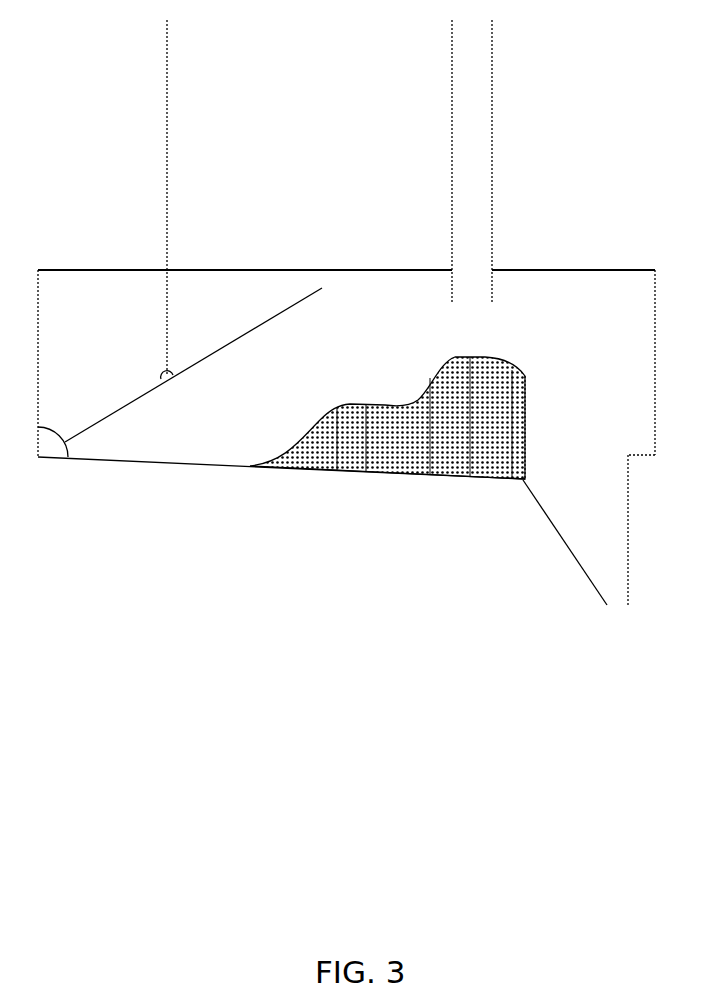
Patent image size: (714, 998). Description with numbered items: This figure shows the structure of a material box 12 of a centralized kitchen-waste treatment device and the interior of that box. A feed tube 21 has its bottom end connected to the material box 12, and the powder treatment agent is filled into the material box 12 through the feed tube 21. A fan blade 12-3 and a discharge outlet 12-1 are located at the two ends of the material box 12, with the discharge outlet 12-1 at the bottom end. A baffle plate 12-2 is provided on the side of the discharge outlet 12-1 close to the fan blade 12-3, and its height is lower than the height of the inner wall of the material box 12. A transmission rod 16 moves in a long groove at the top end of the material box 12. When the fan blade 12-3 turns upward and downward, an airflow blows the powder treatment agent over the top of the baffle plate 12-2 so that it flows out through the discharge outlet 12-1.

The material box 12 is at (283, 463).
The discharge outlet 12-1 is at (576, 510).
The baffle plate 12-2 is at (523, 427).
The fan blade 12-3 is at (243, 335).
The transmission rod 16 is at (168, 195).
The feed tube 21 is at (492, 197).